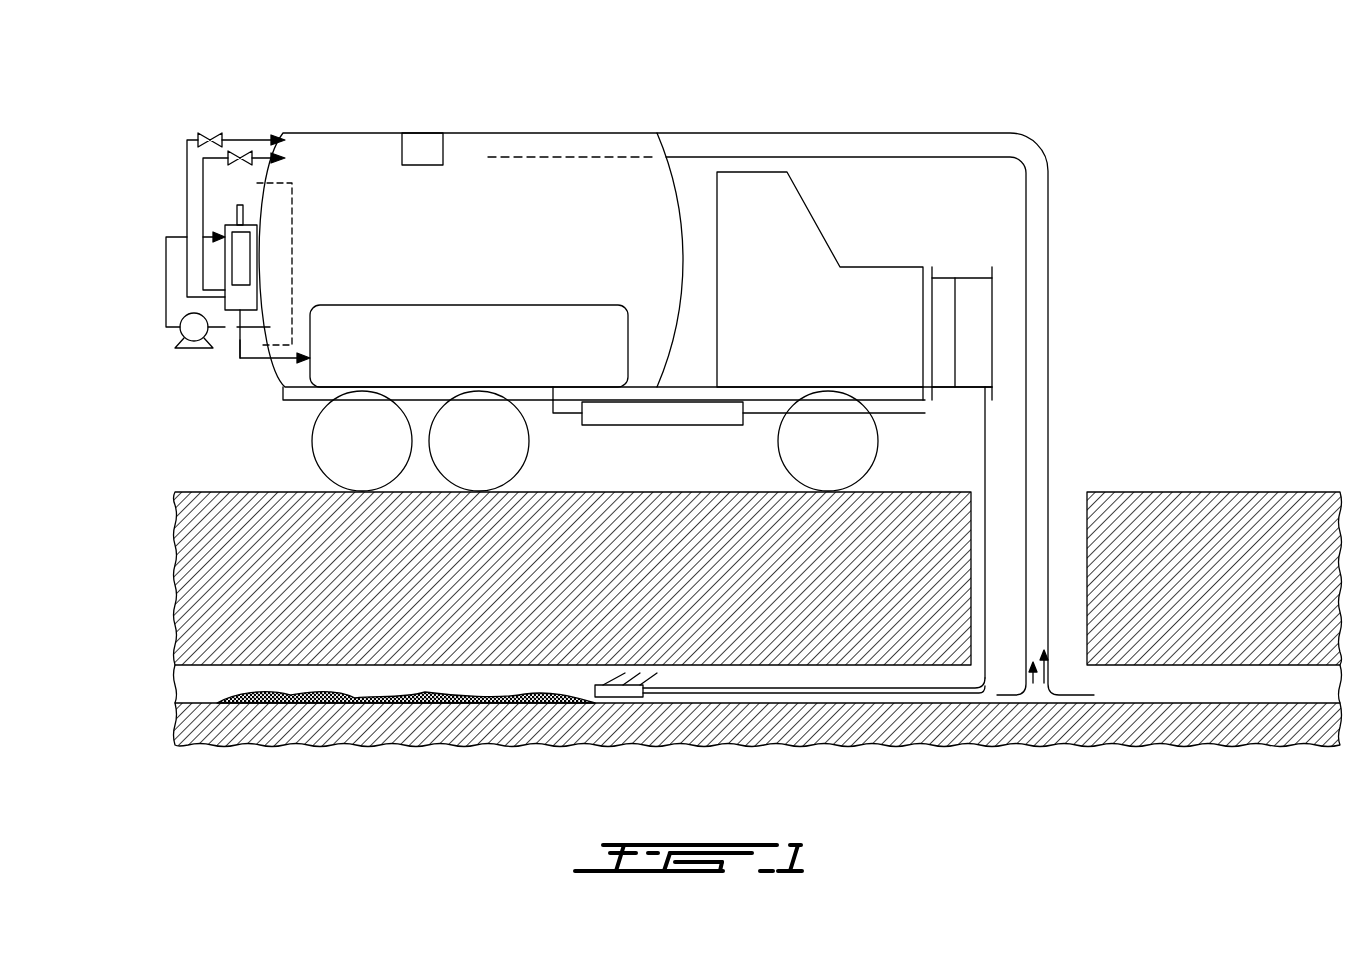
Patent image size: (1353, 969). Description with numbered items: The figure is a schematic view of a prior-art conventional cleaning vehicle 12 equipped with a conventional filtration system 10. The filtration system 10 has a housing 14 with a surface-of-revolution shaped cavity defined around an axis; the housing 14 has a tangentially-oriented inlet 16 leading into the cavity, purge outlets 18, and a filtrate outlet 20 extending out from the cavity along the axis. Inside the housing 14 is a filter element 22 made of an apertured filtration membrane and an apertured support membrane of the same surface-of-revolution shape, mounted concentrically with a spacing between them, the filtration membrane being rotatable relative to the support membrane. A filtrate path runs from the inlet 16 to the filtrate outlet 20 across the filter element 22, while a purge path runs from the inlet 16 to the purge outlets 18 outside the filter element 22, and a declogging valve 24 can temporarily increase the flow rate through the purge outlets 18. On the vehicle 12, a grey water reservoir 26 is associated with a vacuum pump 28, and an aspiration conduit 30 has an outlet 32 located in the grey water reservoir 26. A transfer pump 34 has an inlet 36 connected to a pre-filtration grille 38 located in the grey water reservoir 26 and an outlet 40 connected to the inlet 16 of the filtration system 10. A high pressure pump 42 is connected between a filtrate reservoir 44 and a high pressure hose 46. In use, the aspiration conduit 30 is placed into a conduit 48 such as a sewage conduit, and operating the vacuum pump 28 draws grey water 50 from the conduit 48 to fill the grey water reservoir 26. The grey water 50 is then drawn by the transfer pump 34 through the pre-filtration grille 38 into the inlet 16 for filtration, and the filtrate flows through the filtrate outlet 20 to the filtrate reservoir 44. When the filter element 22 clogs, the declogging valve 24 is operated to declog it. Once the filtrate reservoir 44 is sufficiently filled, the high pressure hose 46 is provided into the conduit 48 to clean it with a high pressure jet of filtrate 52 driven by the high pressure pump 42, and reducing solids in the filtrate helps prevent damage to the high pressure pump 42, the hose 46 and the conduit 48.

The conventional filtration system 10 is at (270, 248).
The conventional cleaning vehicle 12 is at (850, 95).
The housing 14 is at (200, 233).
The tangentially-oriented inlet 16 is at (166, 245).
The purge outlets 18 is at (203, 167).
The filtrate outlet 20 is at (250, 360).
The filter element 22 is at (237, 270).
The declogging valve 24 is at (216, 133).
The grey water reservoir 26 is at (448, 242).
The vacuum pump 28 is at (421, 146).
The aspiration conduit 30 is at (1012, 145).
The outlet 32 is at (502, 147).
The transfer pump 34 is at (193, 327).
The inlet 36 is at (227, 330).
The pre-filtration grille 38 is at (293, 190).
The outlet 40 is at (166, 310).
The high pressure pump 42 is at (647, 413).
The filtrate reservoir 44 is at (448, 349).
The high pressure hose 46 is at (985, 440).
The conduit 48 is at (860, 676).
The grey water 50 is at (1063, 700).
The high pressure jet of filtrate 52 is at (655, 685).